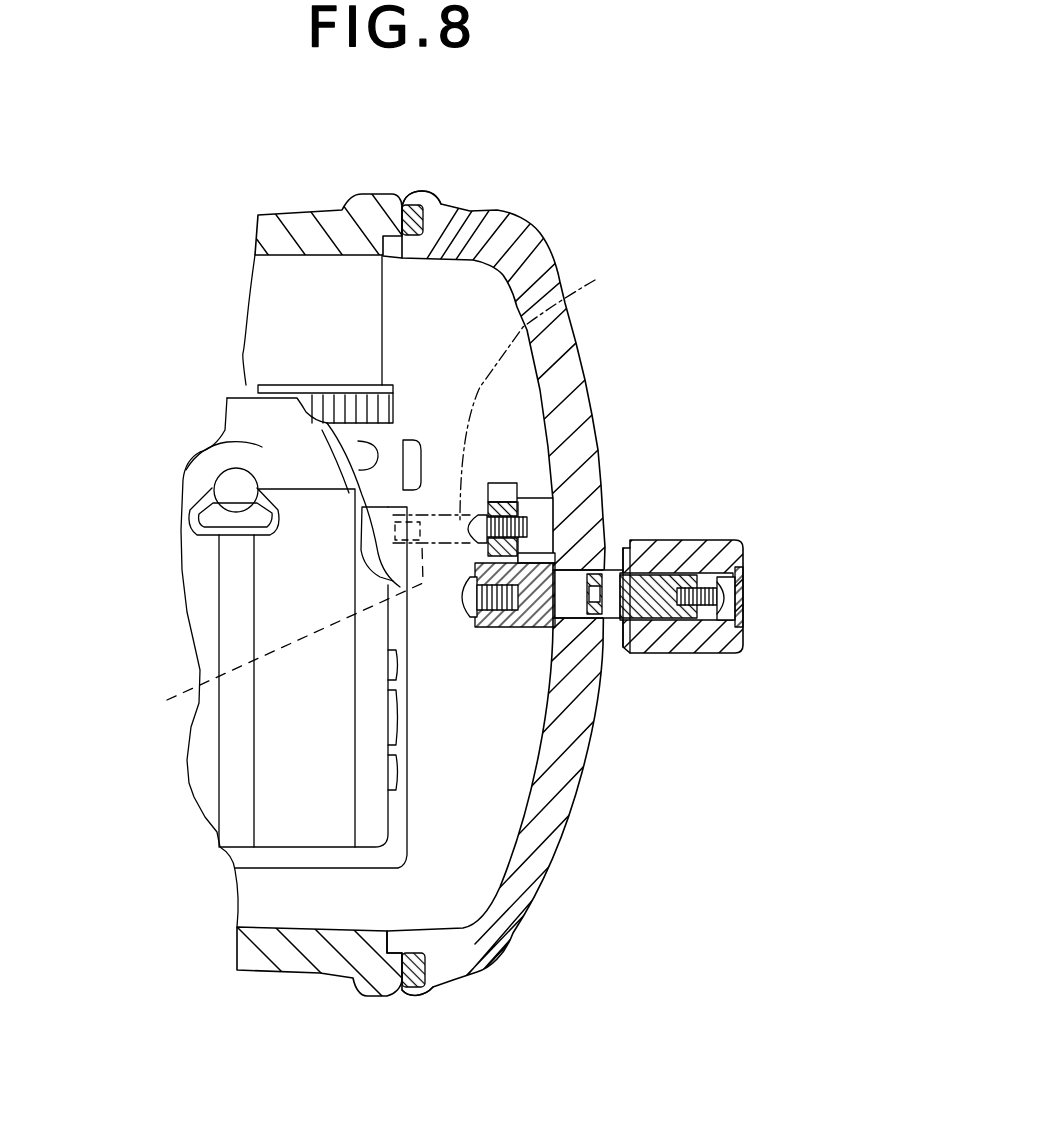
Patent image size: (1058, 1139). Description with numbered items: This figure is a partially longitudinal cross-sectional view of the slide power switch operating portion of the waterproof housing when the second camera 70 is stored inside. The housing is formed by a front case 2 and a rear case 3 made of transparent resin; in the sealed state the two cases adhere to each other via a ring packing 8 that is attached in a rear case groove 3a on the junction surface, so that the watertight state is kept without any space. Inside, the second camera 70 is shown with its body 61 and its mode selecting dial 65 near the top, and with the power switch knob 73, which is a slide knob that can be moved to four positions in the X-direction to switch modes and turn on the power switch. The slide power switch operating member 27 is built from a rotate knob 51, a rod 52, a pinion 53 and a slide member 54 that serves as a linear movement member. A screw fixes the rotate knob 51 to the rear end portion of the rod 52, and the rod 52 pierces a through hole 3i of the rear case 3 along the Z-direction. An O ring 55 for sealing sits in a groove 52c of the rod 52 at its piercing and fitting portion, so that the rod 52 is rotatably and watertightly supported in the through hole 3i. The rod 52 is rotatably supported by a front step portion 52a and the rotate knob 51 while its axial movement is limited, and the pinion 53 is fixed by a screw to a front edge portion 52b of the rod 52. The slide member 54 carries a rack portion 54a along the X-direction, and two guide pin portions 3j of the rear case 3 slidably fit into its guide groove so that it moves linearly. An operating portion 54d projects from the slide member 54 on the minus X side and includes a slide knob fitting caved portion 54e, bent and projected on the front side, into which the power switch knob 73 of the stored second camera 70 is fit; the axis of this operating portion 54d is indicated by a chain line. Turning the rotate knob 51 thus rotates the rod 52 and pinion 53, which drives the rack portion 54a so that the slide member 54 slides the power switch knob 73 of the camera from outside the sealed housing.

The front case 2 is at (287, 213).
The rear case 3 is at (483, 230).
The rear case groove 3a is at (412, 208).
The ring packing 8 is at (430, 208).
The second camera 70 is at (228, 556).
The sensor body 61 is at (202, 445).
The mode selecting dial 65 is at (335, 393).
The power switch knob 73 is at (232, 650).
The slide knob fitting caved portion 54e is at (167, 700).
The operating portion 54d is at (595, 280).
The slide member 54 is at (492, 480).
The rack portion 54a is at (557, 550).
The guide pin portions 3j is at (510, 497).
The rod 52 is at (560, 583).
The front step portion 52a is at (530, 627).
The front edge portion 52b is at (503, 627).
The groove 52c is at (640, 548).
The rotate knob 51 is at (745, 542).
The O ring 55 is at (603, 632).
The pinion 53 is at (480, 628).
The through hole 3i is at (575, 627).
The slide power switch operating member 27 is at (673, 638).